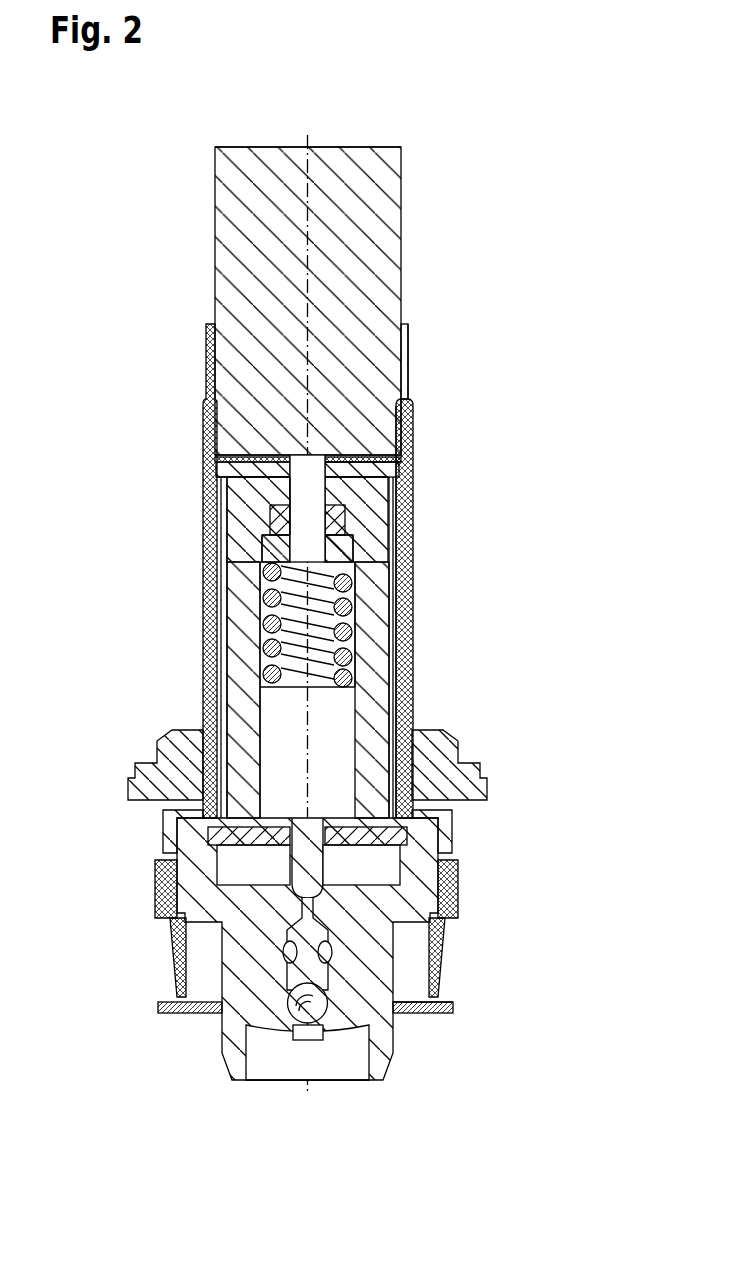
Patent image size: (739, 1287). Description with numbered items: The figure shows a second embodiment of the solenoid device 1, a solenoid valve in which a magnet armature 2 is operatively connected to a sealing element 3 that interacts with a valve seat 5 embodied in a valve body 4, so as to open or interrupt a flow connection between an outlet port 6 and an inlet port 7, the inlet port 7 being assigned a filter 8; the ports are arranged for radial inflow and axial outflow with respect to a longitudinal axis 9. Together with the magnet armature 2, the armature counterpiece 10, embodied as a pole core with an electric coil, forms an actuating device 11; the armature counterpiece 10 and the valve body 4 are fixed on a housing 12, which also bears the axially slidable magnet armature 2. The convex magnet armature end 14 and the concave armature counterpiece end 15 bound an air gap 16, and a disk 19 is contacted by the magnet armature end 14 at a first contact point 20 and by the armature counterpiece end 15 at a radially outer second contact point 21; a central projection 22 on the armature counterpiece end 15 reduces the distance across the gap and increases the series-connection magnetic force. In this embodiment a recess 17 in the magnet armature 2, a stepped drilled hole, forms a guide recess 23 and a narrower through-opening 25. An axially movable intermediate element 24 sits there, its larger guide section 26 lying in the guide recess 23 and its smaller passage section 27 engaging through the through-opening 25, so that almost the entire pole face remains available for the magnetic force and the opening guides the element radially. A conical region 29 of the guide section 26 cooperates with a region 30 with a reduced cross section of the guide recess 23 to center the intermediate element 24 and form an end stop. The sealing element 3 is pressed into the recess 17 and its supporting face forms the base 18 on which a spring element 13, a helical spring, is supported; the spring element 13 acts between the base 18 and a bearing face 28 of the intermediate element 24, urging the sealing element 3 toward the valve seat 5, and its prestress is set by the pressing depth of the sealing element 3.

The solenoid device 1 is at (520, 110).
The magnet armature 2 is at (370, 640).
The sealing element 3 is at (313, 867).
The valve body 4 is at (370, 935).
The valve seat 5 is at (330, 897).
The outlet port 6 is at (268, 1102).
The inlet port 7 is at (520, 980).
The filter 8 is at (440, 1005).
The longitudinal axis 9 is at (310, 182).
The armature counterpiece 10 is at (385, 245).
The actuating device 11 is at (428, 360).
The housing 12 is at (393, 533).
The spring element 13 is at (360, 667).
The magnet armature end 14 is at (387, 470).
The armature counterpiece end 15 is at (222, 473).
The air gap 16 is at (225, 440).
The recess 17 is at (262, 592).
The base 18 is at (270, 662).
The disk 19 is at (401, 445).
The first contact point 20 is at (380, 462).
The second contact point 21 is at (212, 452).
The projection 22 is at (330, 443).
The guide recess 23 is at (260, 625).
The intermediate element 24 is at (350, 552).
The through-opening 25 is at (268, 492).
The guide section 26 is at (260, 548).
The passage section 27 is at (360, 523).
The bearing face 28 is at (360, 595).
The conical region 29 is at (350, 500).
The region with a reduced cross section 30 is at (270, 507).